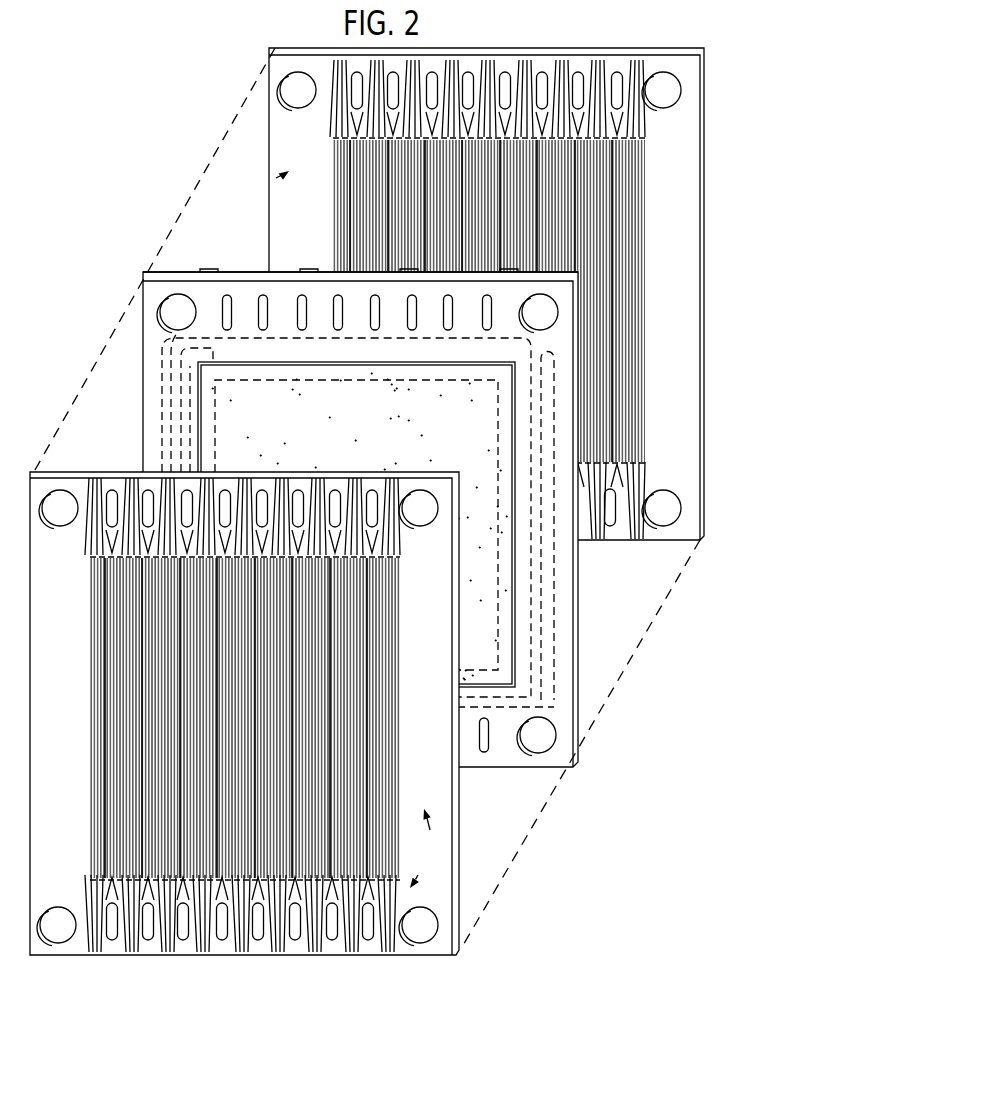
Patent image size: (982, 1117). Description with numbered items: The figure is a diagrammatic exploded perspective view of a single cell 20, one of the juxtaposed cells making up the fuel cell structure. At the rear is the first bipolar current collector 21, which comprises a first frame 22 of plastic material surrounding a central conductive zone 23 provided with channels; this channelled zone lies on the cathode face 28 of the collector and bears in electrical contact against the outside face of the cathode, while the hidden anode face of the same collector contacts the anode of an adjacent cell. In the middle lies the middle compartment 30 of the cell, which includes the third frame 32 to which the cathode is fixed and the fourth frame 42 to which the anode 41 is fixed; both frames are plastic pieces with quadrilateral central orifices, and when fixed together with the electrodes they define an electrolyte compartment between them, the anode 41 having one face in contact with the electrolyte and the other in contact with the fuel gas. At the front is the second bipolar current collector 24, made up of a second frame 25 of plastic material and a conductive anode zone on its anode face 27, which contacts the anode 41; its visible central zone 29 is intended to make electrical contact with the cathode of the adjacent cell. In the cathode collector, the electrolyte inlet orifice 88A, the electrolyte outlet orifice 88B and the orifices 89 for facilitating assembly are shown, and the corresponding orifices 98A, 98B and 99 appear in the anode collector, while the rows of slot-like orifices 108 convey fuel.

The cell 20 is at (550, 808).
The first bipolar current collector 21 is at (258, 157).
The first frame 22 is at (282, 206).
The central conductive zone 23 is at (345, 246).
The second bipolar current collector 24 is at (87, 464).
The second frame 25 is at (430, 830).
The anode face 27 is at (418, 875).
The cathode face 28 is at (276, 178).
The central zone 29 is at (374, 785).
The middle compartment 30 is at (143, 270).
The third frame 32 is at (185, 266).
The anode 41 is at (252, 421).
The fourth frame 42 is at (146, 347).
The electrolyte inlet orifice 88A is at (298, 90).
The electrolyte outlet orifice 88B is at (663, 510).
The orifices for facilitating component assembly 89 is at (663, 90).
The electrolyte inlet orifice 98A is at (60, 505).
The electrolyte outlet orifice 98B is at (420, 932).
The orifices for facilitating component assembly 99 is at (420, 506).
The orifices for conveying fuel 108 is at (584, 85).